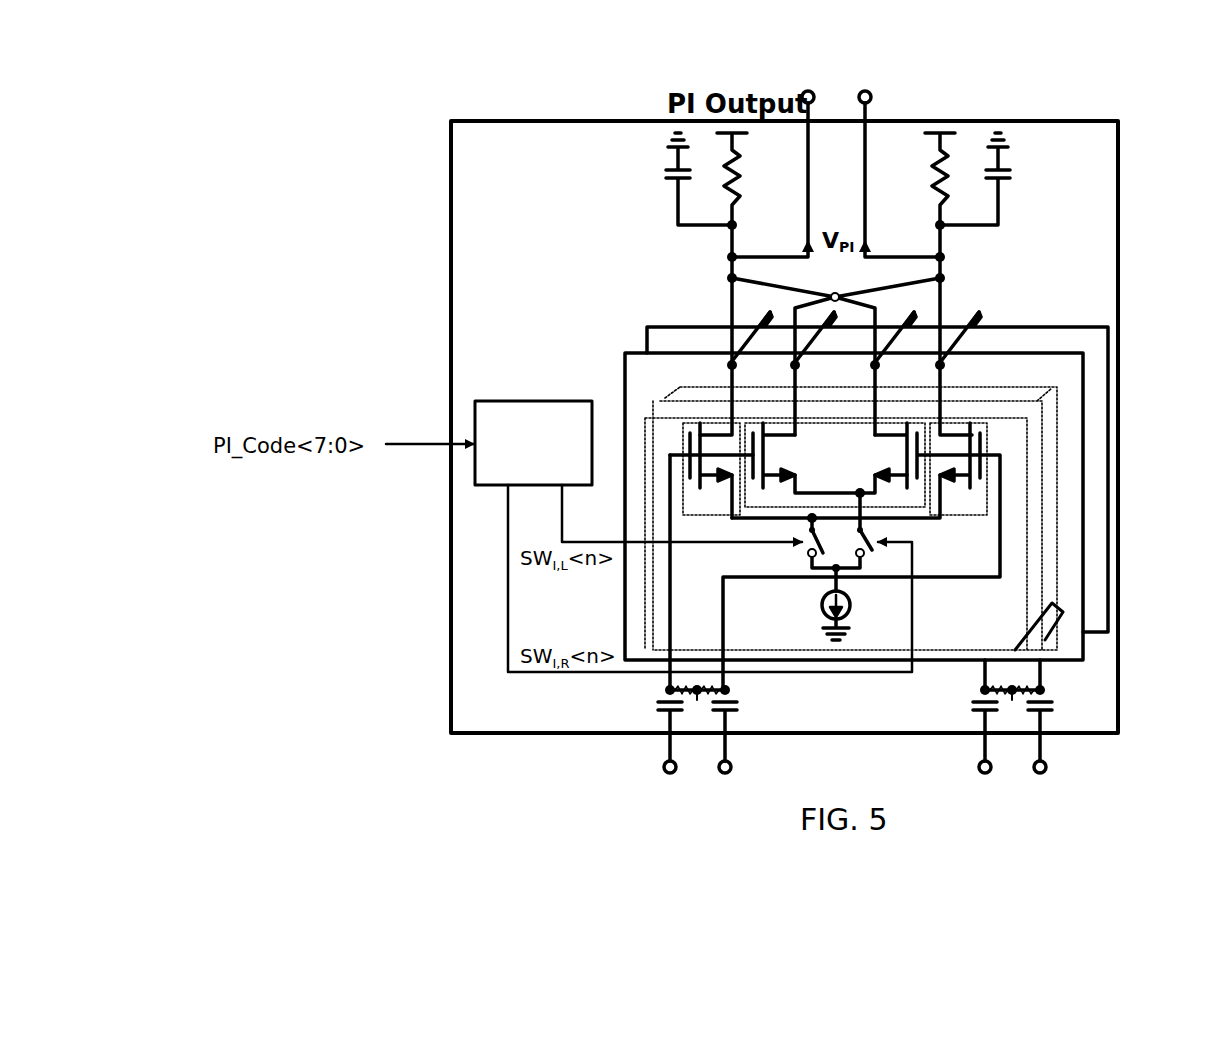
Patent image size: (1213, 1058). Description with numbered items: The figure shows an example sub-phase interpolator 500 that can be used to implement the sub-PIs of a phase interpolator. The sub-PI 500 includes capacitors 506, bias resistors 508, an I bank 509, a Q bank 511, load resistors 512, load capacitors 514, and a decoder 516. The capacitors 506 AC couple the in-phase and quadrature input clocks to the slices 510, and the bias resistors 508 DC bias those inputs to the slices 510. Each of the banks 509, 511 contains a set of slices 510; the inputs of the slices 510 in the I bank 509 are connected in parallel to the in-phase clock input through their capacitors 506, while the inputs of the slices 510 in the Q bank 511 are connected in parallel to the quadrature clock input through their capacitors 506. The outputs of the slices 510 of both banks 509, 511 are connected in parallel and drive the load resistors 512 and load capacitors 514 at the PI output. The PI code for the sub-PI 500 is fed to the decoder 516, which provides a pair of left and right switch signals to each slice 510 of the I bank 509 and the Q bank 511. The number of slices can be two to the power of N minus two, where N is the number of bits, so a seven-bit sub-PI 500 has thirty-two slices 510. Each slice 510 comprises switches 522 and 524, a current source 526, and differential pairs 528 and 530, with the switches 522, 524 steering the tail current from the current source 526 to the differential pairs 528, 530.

The sub-phase interpolator 500 is at (1118, 121).
The capacitors 506 is at (654, 710).
The bias resistors 508 is at (654, 690).
The I bank 509 is at (623, 370).
The slice 510 is at (1045, 640).
The Q bank 511 is at (645, 327).
The load resistors 512 is at (740, 178).
The load capacitors 514 is at (672, 188).
The decoder 516 is at (500, 401).
The switch 522 is at (805, 549).
The switch 524 is at (870, 535).
The current source 526 is at (822, 615).
The differential pair 528 is at (711, 471).
The differential pair 530 is at (866, 469).